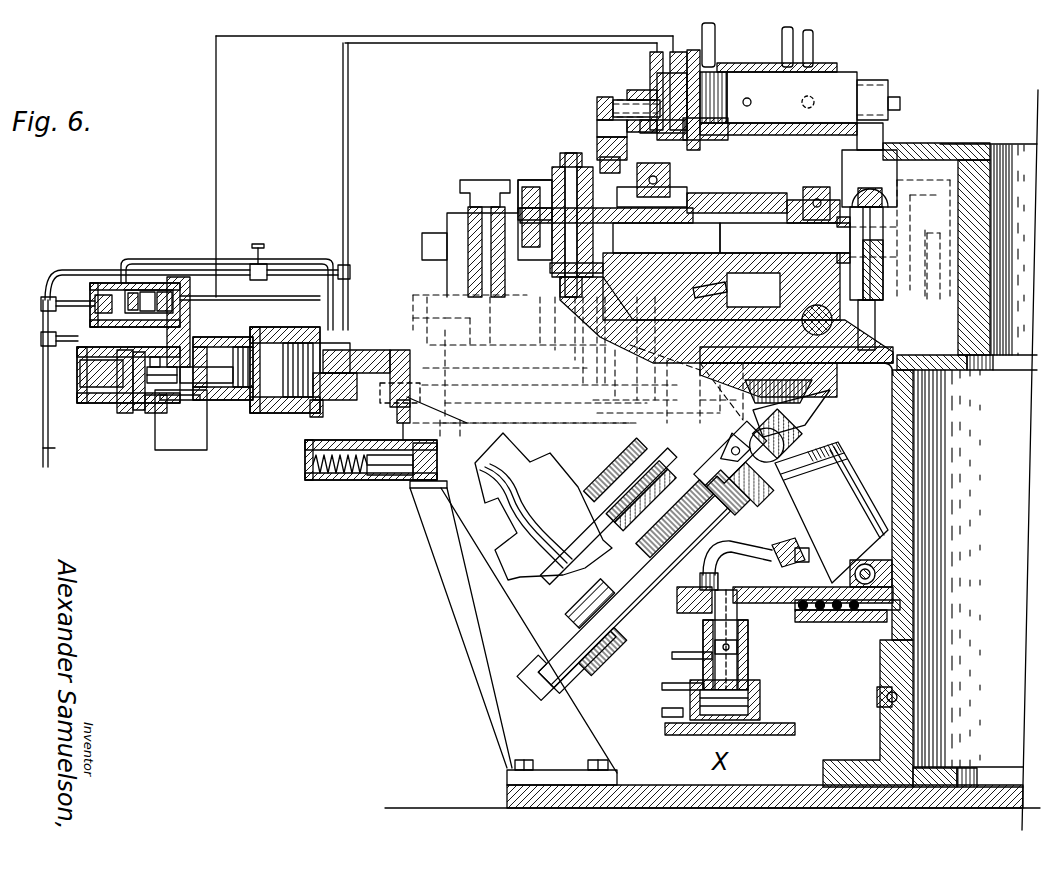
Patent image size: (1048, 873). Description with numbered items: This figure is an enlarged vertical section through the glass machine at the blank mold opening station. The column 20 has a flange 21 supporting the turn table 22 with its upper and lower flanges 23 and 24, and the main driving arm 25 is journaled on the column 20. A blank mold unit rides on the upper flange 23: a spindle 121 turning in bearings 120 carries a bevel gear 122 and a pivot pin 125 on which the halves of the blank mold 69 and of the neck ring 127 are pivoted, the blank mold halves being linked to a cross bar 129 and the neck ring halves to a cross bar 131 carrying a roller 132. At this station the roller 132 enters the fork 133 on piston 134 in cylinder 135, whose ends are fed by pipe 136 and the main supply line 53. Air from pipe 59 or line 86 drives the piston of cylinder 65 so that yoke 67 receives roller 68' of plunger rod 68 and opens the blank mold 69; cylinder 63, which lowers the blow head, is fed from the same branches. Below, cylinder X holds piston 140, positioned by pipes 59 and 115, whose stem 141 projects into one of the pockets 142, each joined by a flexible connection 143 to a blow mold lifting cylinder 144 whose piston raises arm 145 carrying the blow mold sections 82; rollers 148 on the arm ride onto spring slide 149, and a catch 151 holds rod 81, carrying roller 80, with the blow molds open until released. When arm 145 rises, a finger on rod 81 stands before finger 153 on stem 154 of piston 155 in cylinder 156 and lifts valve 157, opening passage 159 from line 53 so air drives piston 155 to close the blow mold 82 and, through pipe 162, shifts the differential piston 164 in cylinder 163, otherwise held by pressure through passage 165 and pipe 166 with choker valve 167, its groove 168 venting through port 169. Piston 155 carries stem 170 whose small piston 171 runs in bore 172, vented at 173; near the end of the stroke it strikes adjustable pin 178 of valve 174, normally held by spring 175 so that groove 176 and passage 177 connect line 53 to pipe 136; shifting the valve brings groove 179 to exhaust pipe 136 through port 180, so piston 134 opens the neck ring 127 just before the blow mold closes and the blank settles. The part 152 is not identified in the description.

The supporting pedestal or column 20 is at (907, 628).
The flange 21 is at (856, 623).
The turn table 22 is at (896, 512).
The upper horizontal flange 23 is at (878, 364).
The lower horizontal flange 24 is at (791, 606).
The main driving arm 25 is at (885, 676).
The main supply line 53 is at (546, 47).
The pipe 59 is at (716, 46).
The cylinder 63 is at (705, 137).
The cylinder 65 is at (750, 64).
The yoke 67 is at (884, 143).
The plunger rod 68 is at (801, 278).
The roller 68' is at (906, 164).
The blank mold 69 is at (448, 264).
The roller 80 is at (583, 680).
The rod 81 is at (645, 605).
The blow mold sections 82 is at (566, 468).
The line 86 is at (786, 36).
The pipe 115 is at (662, 688).
The bearings 120 is at (672, 182).
The spindle 121 is at (765, 273).
The bevel gear 122 is at (712, 190).
The pivot pin 125 is at (563, 158).
The neck ring 127 is at (470, 178).
The cross bar 129 is at (612, 285).
The cross bar 131 is at (666, 238).
The roller 132 is at (603, 152).
The fork 133 is at (612, 145).
The piston 134 is at (648, 92).
The cylinder 135 is at (652, 163).
The pipe 136 is at (613, 38).
The piston 140 is at (755, 690).
The stem 141 is at (704, 630).
The pockets 142 is at (722, 584).
The flexible connection 143 is at (752, 548).
The blow mold lifting cylinder 144 is at (860, 482).
The arm 145 is at (812, 425).
The rollers 148 is at (608, 655).
The spring slide 149 is at (415, 462).
The catch 151 is at (700, 472).
The spring housing 152 is at (330, 472).
The finger 153 is at (438, 412).
The piston stem 154 is at (352, 384).
The piston 155 is at (298, 390).
The cylinder 156 is at (285, 335).
The valve 157 is at (405, 398).
The passage 159 is at (365, 352).
The pipe 162 is at (227, 294).
The cylinder 163 is at (162, 292).
The piston 164 is at (148, 290).
The passage 165 is at (100, 292).
The pipe 166 is at (188, 268).
The choker valve 167 is at (268, 260).
The groove 168 is at (128, 291).
The port 169 is at (133, 340).
The stem 170 is at (256, 390).
The piston 171 is at (230, 390).
The bore 172 is at (226, 345).
The vent 173 is at (204, 339).
The valve 174 is at (142, 390).
The spring 175 is at (100, 388).
The groove 176 is at (128, 382).
The passage 177 is at (150, 414).
The adjustable pin 178 is at (180, 420).
The groove 179 is at (200, 398).
The port 180 is at (155, 356).